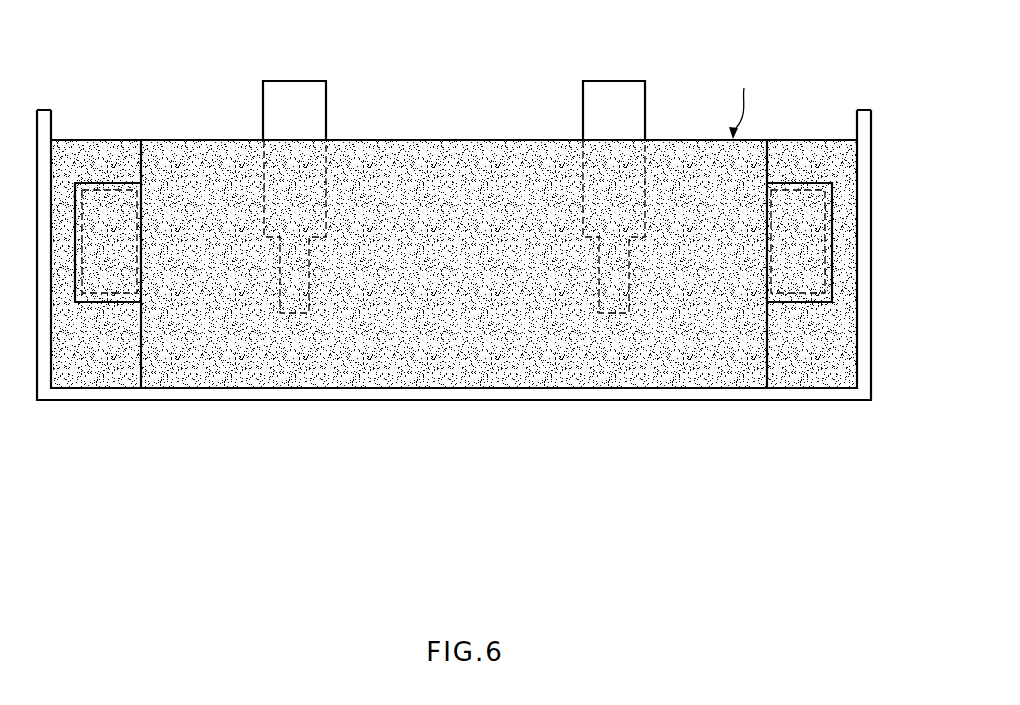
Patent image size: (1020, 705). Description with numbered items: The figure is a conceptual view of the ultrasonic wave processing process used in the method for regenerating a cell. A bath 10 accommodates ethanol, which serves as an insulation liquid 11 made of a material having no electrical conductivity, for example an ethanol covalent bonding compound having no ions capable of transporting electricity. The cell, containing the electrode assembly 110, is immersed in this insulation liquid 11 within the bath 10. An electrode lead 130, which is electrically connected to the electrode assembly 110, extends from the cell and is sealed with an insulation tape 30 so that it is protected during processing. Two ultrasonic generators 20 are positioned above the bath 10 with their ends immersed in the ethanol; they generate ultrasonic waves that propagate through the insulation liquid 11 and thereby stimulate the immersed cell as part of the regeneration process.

The bath 10 is at (367, 393).
The insulation liquid 11 is at (572, 376).
The ultrasonic generator 20 is at (293, 97).
The insulation tape 30 is at (830, 268).
The electrode assembly 110 is at (744, 100).
The electrode lead 130 is at (812, 216).